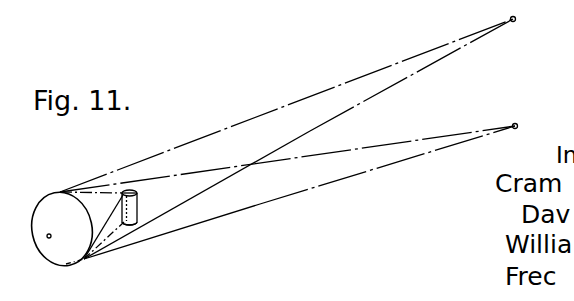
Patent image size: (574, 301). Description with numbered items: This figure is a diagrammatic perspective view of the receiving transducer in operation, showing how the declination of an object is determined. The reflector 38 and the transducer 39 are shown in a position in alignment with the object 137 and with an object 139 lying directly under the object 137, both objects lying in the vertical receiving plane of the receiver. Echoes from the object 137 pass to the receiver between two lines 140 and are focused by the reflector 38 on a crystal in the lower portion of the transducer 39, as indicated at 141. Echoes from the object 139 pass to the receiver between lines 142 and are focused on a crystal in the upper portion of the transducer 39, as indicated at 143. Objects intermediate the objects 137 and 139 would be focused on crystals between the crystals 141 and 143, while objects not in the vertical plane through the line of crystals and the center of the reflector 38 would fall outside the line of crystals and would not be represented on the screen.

The reflector 38 is at (62, 258).
The transducer 39 is at (138, 200).
The object 137 is at (516, 18).
The object 139 is at (518, 124).
The lines 140 is at (365, 100).
The crystal 141 is at (126, 225).
The lines 142 is at (380, 146).
The crystal 143 is at (127, 190).